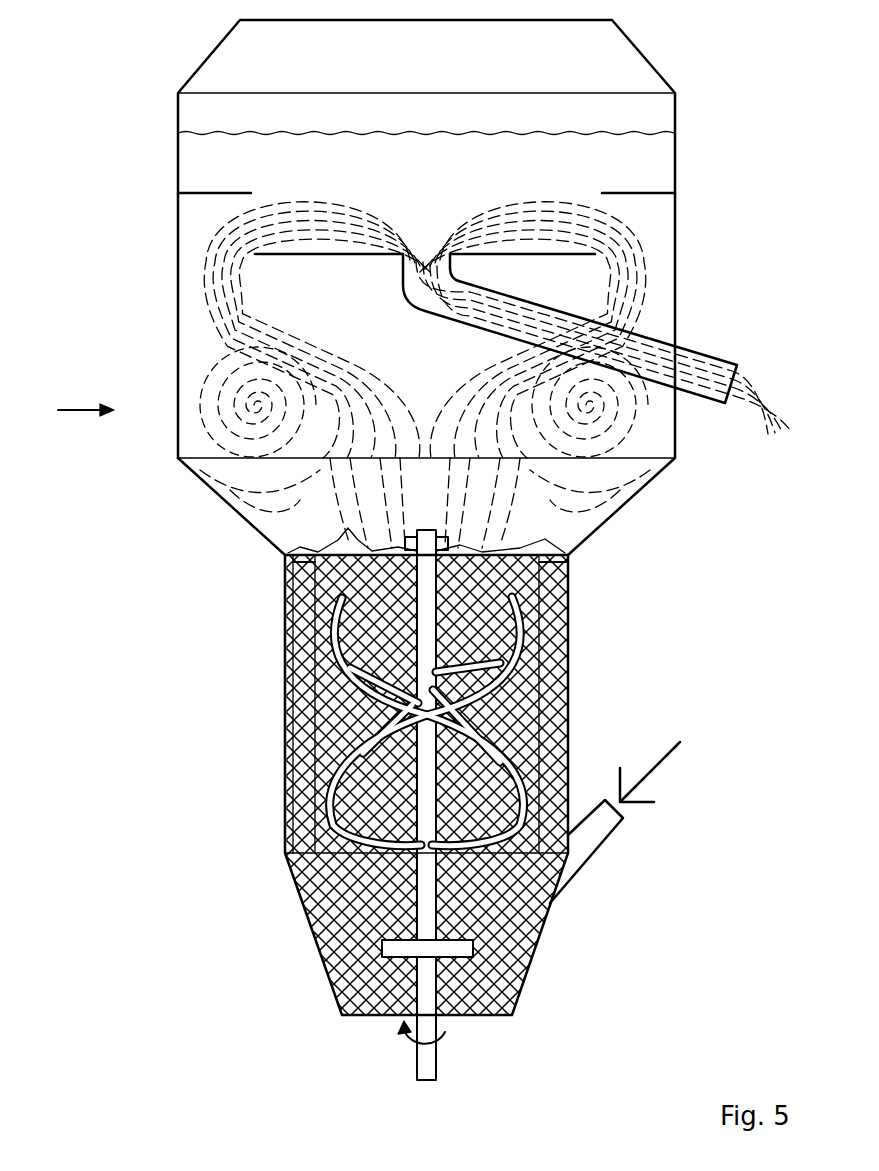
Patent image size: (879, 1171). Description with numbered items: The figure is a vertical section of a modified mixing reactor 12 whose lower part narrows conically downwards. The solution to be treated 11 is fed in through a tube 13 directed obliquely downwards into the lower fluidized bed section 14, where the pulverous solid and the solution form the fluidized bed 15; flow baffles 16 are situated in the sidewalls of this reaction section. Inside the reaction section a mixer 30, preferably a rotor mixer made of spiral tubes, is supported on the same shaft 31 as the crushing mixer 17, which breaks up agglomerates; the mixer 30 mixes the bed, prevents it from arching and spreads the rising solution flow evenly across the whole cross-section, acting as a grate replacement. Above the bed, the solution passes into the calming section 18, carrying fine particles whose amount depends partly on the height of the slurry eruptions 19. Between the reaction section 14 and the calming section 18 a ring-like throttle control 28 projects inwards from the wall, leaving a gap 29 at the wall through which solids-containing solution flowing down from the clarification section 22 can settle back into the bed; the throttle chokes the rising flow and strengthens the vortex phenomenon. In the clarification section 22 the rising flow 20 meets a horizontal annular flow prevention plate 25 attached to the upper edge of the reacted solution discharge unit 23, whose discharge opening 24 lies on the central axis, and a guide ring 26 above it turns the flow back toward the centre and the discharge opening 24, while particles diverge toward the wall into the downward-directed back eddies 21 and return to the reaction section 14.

The solution to be treated 11 is at (670, 764).
The mixing reactor 12 is at (69, 411).
The tube 13 is at (600, 832).
The fluidized bed section 14 is at (276, 838).
The fluidized bed 15 is at (568, 658).
The flow baffles 16 is at (568, 705).
The crushing mixer element 17 is at (385, 945).
The calming section 18 is at (219, 507).
The slurry eruptions 19 is at (290, 545).
The rising flow 20 is at (483, 472).
The back eddies 21 is at (620, 418).
The clarification section 22 is at (168, 235).
The reacted solution discharge unit 23 is at (685, 353).
The discharge opening 24 is at (452, 265).
The flow prevention plate 25 is at (573, 252).
The guide ring 26 is at (655, 193).
The throttle control 28 is at (570, 575).
The gap 29 is at (568, 548).
The mixer 30 is at (330, 730).
The shaft 31 is at (430, 1030).